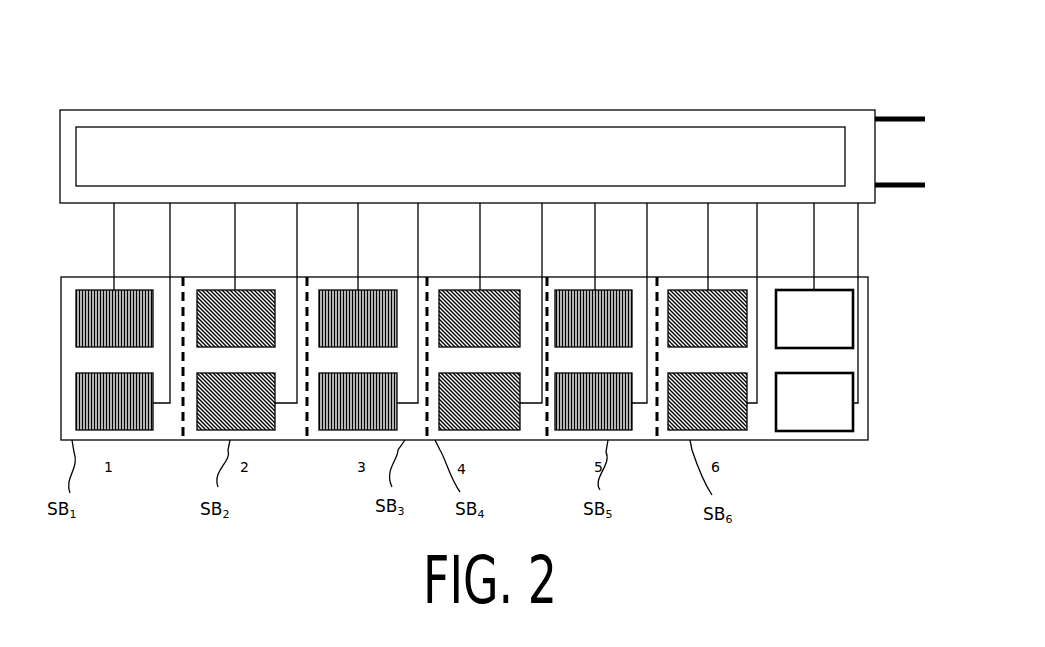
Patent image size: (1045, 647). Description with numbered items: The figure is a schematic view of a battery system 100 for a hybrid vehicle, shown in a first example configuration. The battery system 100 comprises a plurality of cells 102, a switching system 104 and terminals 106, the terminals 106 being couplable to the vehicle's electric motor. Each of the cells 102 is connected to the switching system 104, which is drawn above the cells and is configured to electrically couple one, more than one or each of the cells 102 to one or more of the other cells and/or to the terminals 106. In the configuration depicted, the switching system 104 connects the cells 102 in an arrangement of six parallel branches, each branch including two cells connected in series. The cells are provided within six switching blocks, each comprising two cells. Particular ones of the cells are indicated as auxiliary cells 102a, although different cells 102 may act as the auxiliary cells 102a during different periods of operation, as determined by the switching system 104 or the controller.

The battery system 100 is at (170, 68).
The cells 102 is at (75, 402).
The auxiliary cells 102a is at (853, 320).
The switching system 104 is at (636, 128).
The terminals 106 is at (925, 183).